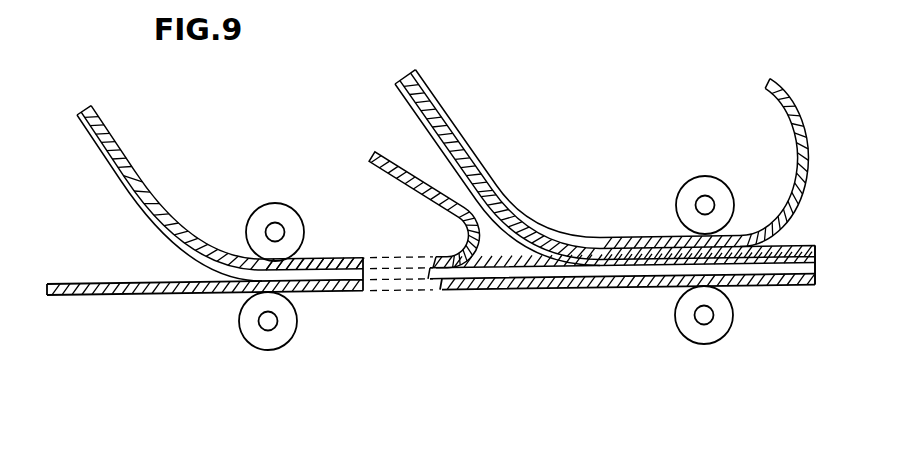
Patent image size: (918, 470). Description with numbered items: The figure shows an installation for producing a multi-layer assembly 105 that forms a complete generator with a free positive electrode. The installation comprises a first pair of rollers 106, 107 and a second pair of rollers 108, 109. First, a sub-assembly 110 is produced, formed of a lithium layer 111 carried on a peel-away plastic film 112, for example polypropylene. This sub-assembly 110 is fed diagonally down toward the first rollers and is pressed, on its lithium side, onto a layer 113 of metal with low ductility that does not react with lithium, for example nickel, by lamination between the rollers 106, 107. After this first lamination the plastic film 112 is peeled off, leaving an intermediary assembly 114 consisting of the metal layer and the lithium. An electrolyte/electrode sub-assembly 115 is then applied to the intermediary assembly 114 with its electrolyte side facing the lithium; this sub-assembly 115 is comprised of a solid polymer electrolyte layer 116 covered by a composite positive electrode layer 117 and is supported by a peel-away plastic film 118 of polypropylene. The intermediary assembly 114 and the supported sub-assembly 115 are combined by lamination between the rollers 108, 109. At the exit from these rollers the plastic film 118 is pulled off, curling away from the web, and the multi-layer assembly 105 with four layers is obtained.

The multi-layer assembly 105 is at (817, 264).
The roller 106 is at (271, 212).
The roller 107 is at (265, 343).
The roller 108 is at (702, 187).
The roller 109 is at (703, 338).
The sub-assembly 110 is at (79, 104).
The lithium layer 111 is at (100, 155).
The peel-away plastic film 112 is at (118, 156).
The layer of metal with low ductility 113 is at (77, 296).
The intermediary assembly 114 is at (477, 292).
The electrolyte/electrode sub-assembly 115 is at (392, 66).
The solid polymer electrolyte layer 116 is at (404, 106).
The composite positive electrode layer 117 is at (456, 125).
The peel-away plastic film 118 is at (522, 197).